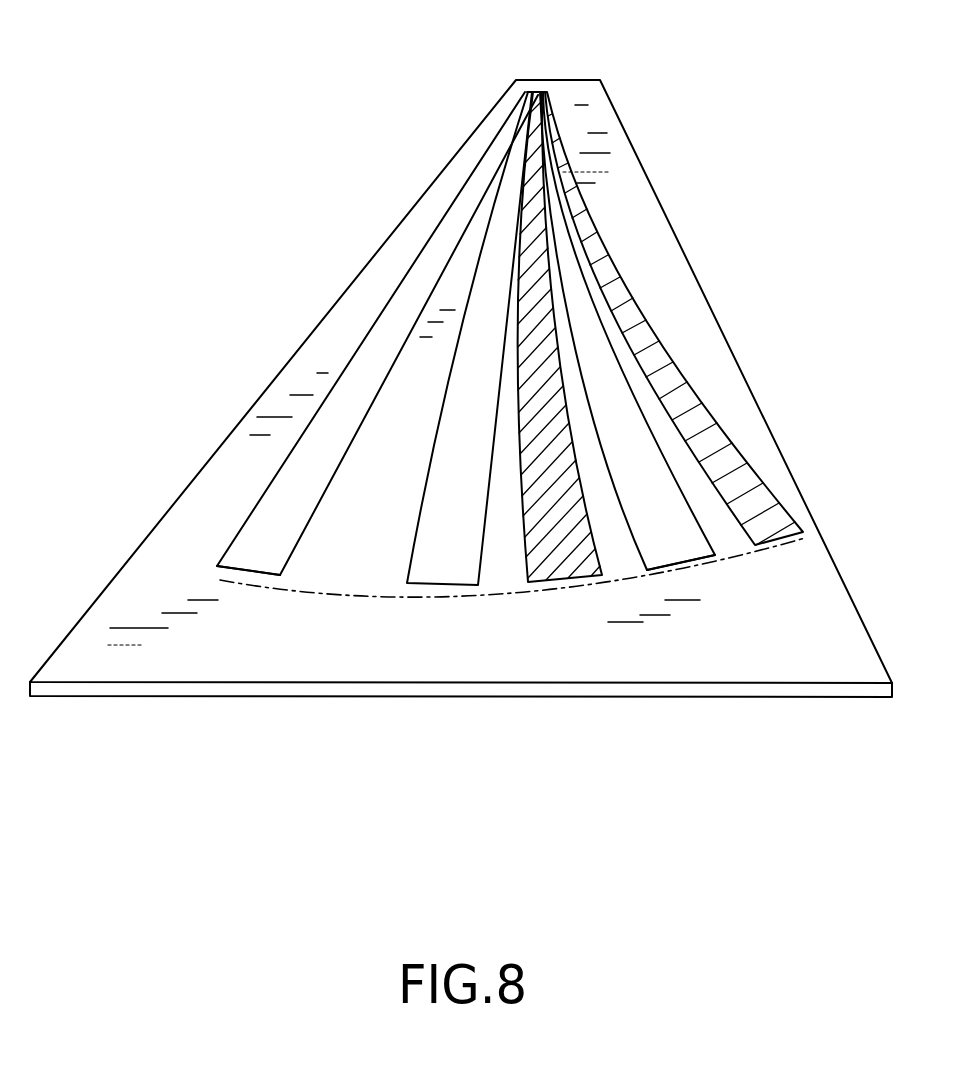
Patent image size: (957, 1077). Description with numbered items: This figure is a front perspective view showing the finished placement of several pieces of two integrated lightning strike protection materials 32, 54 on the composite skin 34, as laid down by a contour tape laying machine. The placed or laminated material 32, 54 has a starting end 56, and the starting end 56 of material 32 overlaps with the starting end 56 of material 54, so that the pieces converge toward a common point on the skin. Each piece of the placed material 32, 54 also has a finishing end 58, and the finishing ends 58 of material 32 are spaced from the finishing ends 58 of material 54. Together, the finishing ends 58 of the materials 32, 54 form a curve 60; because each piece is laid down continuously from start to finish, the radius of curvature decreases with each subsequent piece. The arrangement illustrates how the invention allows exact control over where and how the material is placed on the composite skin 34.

The integrated lightning strike protection material 32 is at (333, 407).
The composite skin 34 is at (175, 542).
The integrated lightning strike protection material 54 is at (553, 407).
The starting end 56 is at (534, 92).
The finishing end 58 is at (217, 572).
The curve 60 is at (418, 594).